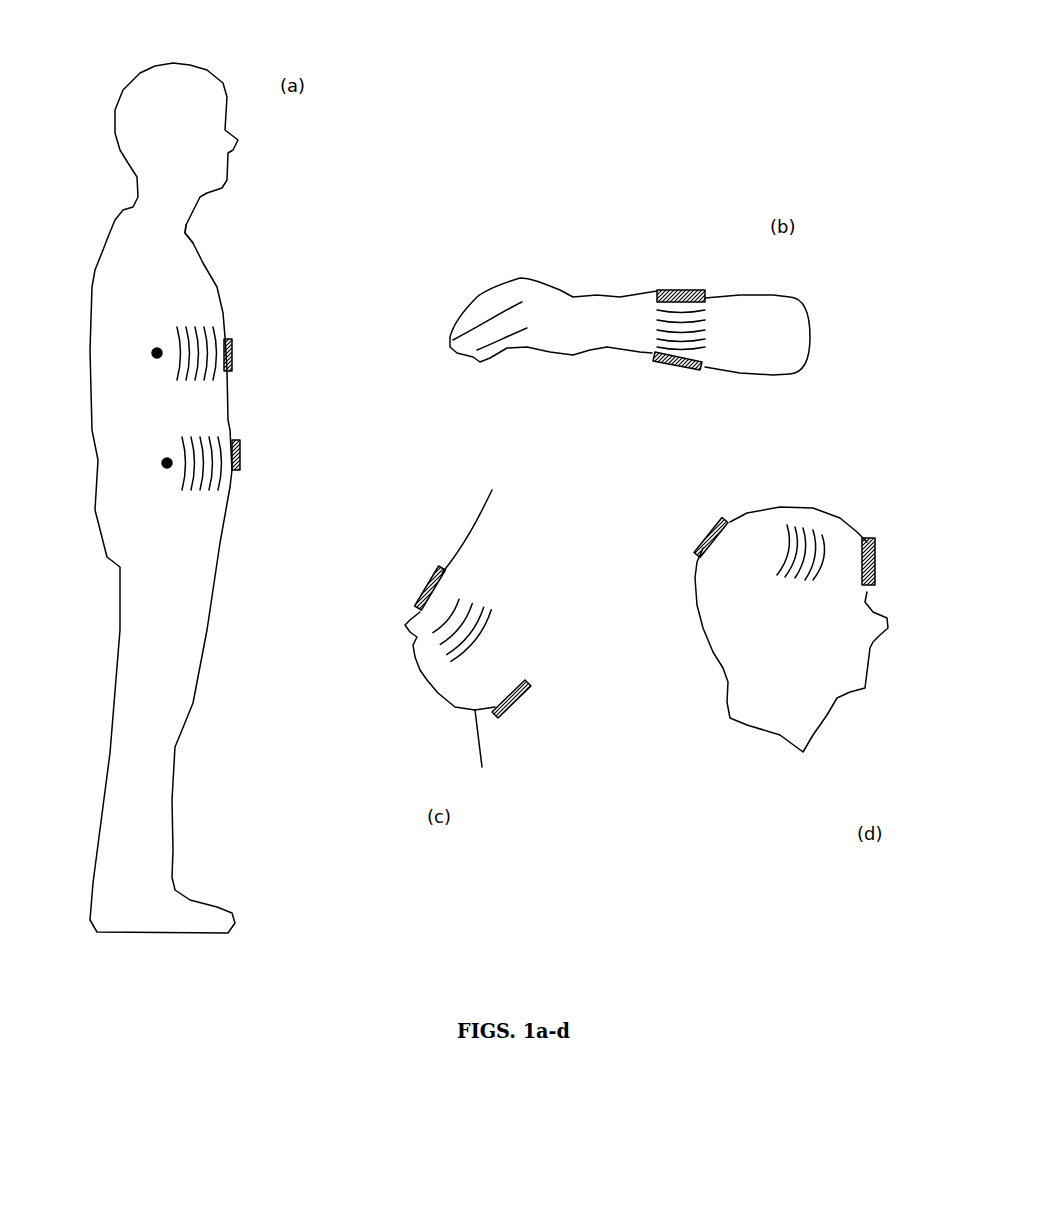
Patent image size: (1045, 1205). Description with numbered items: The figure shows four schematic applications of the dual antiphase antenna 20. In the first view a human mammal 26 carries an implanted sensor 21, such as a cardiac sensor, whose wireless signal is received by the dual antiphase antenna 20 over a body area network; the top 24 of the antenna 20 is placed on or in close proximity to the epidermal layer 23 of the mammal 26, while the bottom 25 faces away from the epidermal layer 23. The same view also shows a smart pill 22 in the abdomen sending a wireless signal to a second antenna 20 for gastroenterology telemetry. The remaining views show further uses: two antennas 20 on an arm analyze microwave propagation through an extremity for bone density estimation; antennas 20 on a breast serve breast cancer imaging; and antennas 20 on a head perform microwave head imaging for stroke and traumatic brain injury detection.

In FIG. 1a, the dual antiphase antenna 20 is at (232, 371).
In FIG. 1b, the dual antiphase antenna 20 is at (681, 289).
In FIG. 1c, the dual antiphase antenna 20 is at (428, 587).
In FIG. 1d, the dual antiphase antenna 20 is at (715, 532).
In FIG. 1a, the implanted sensor 21 is at (156, 347).
In FIG. 1a, the smart pill 22 is at (167, 457).
In FIG. 1a, the epidermal layer 23 is at (188, 232).
In FIG. 1a, the top 24 is at (225, 317).
In FIG. 1a, the bottom 25 is at (233, 348).
In FIG. 1a, the mammal 26 is at (140, 272).